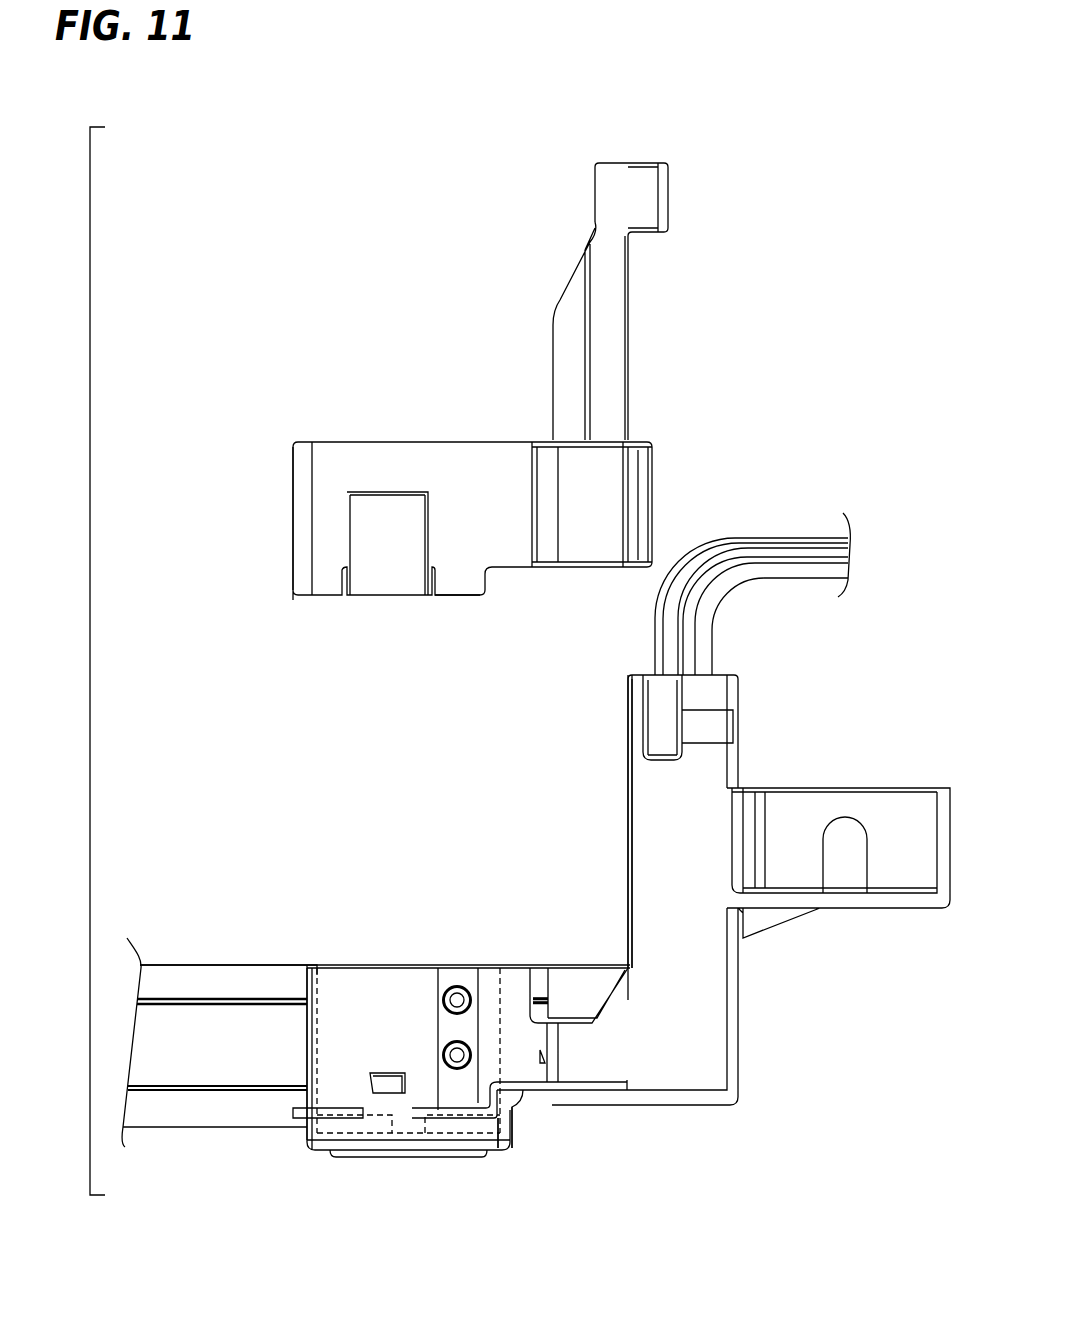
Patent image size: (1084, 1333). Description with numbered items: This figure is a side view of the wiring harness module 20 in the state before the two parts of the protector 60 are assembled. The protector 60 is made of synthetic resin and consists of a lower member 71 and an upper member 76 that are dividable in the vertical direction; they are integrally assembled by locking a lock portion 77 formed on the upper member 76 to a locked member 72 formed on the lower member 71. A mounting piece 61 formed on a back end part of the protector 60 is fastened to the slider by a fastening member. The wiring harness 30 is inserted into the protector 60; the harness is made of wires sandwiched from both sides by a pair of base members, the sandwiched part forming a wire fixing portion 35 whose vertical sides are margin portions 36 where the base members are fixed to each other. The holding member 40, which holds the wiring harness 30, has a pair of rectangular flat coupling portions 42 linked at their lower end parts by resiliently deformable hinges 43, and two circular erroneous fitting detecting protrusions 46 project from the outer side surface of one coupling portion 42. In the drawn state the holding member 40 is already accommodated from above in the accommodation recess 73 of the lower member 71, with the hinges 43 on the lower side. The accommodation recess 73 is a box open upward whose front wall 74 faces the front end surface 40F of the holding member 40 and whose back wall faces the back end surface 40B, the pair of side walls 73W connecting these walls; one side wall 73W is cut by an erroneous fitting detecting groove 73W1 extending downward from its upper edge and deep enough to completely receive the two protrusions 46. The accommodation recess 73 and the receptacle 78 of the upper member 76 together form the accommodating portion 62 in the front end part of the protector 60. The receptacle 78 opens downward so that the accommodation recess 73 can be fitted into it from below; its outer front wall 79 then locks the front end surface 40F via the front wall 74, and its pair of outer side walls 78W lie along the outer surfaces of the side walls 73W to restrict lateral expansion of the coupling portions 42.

The wiring harness module 20 is at (76, 661).
The wiring harness 30 is at (214, 1009).
The wire fixing portion 35 is at (158, 1062).
The margin portions 36 is at (227, 1098).
The holding member 40 is at (439, 928).
The front end surface 40F is at (310, 1033).
The back end surface 40B is at (500, 1030).
The coupling portions 42 is at (460, 1027).
The hinges 43 is at (358, 1137).
The erroneous fitting detecting protrusions 46 is at (443, 1053).
The protector 60 is at (712, 581).
The mounting piece 61 is at (903, 822).
The accommodating portion 62 is at (433, 520).
The lower member 71 is at (712, 710).
The locked member 72 is at (388, 1073).
The accommodation recess 73 is at (405, 1063).
The side walls 73W is at (355, 1000).
The erroneous fitting detecting groove 73W1 is at (473, 1033).
The front wall 74 is at (307, 988).
The upper member 76 is at (600, 497).
The lock portion 77 is at (387, 572).
The receptacle 78 is at (433, 520).
The outer side walls 78W is at (458, 533).
The outer front wall 79 is at (302, 513).